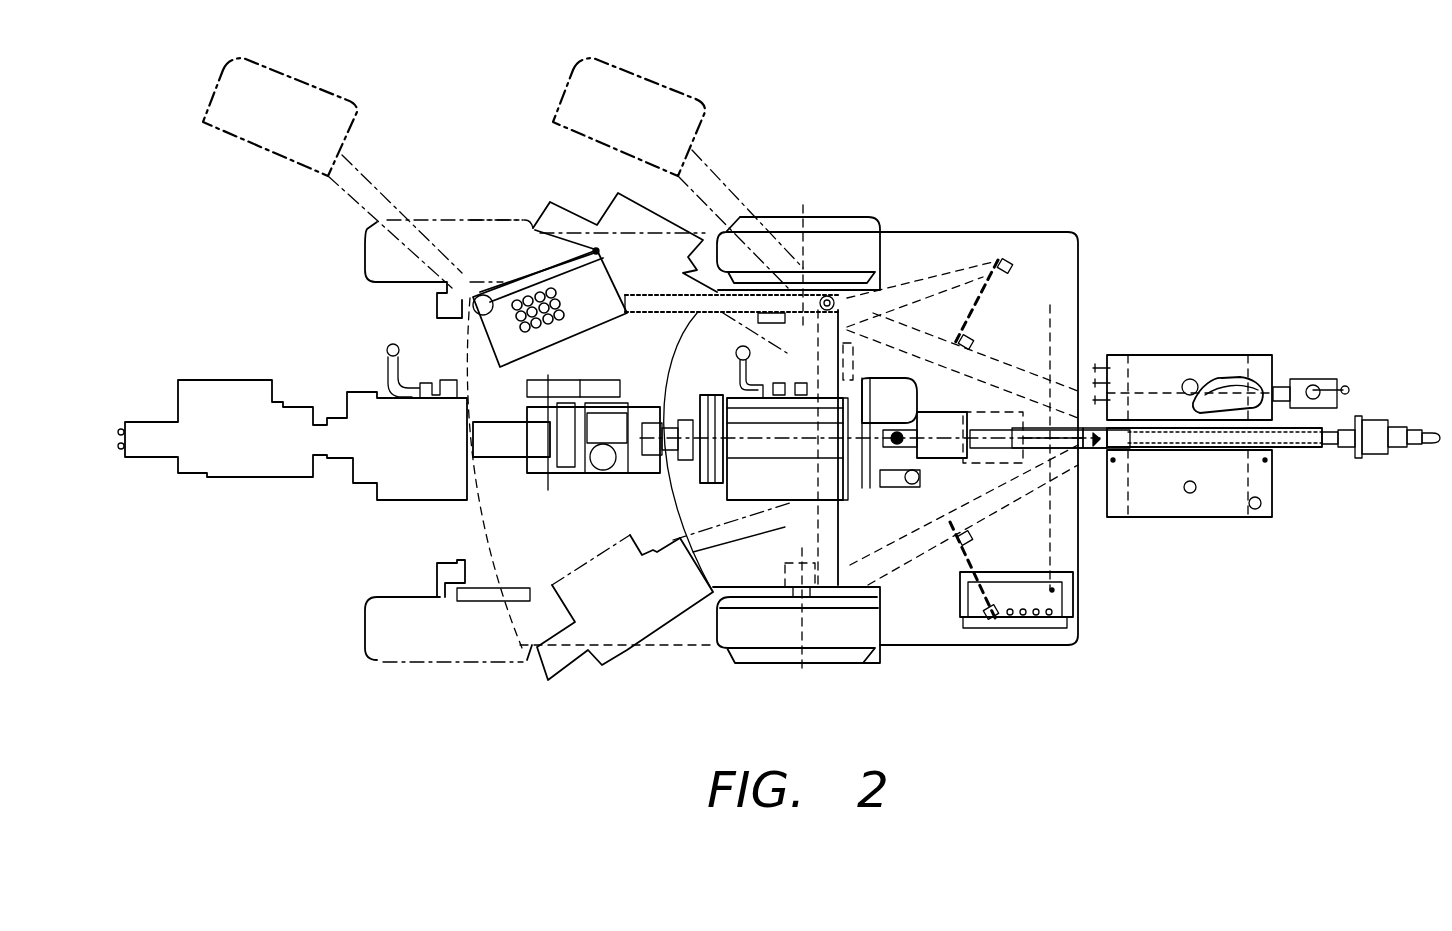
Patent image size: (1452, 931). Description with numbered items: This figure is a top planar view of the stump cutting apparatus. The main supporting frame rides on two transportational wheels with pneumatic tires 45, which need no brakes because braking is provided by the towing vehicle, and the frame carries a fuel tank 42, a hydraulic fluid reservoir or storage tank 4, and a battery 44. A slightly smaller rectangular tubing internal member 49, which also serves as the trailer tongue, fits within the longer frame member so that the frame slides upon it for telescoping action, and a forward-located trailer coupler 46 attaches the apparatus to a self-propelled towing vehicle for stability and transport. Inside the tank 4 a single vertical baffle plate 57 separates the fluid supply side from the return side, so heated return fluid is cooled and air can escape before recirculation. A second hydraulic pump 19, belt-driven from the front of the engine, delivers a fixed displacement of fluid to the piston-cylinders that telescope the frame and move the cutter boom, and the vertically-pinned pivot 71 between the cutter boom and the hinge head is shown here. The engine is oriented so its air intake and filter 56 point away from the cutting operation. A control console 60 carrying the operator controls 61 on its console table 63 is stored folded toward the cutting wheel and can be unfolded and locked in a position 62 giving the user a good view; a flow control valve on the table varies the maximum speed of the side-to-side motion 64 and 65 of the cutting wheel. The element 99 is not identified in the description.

The workpiece 99 is at (152, 417).
The side-to-side motion 65 is at (537, 205).
The control console 60 is at (657, 289).
The operator controls 61 is at (508, 316).
The console table 63 is at (495, 353).
The unfolded position 62 is at (725, 182).
The wheels with pneumatic tires 45 is at (838, 215).
The second hydraulic pump 19 is at (847, 380).
The baffle plate 57 is at (1240, 387).
The air intake and filter 56 is at (1058, 303).
The hydraulic fluid reservoir 4 is at (1167, 353).
The trailer coupler 46 is at (1432, 422).
The trailer tongue 49 is at (1330, 450).
The vertically-pinned pivot 71 is at (917, 450).
The fuel tank 42 is at (1207, 521).
The battery 44 is at (1048, 634).
The side-to-side motion 64 is at (543, 676).